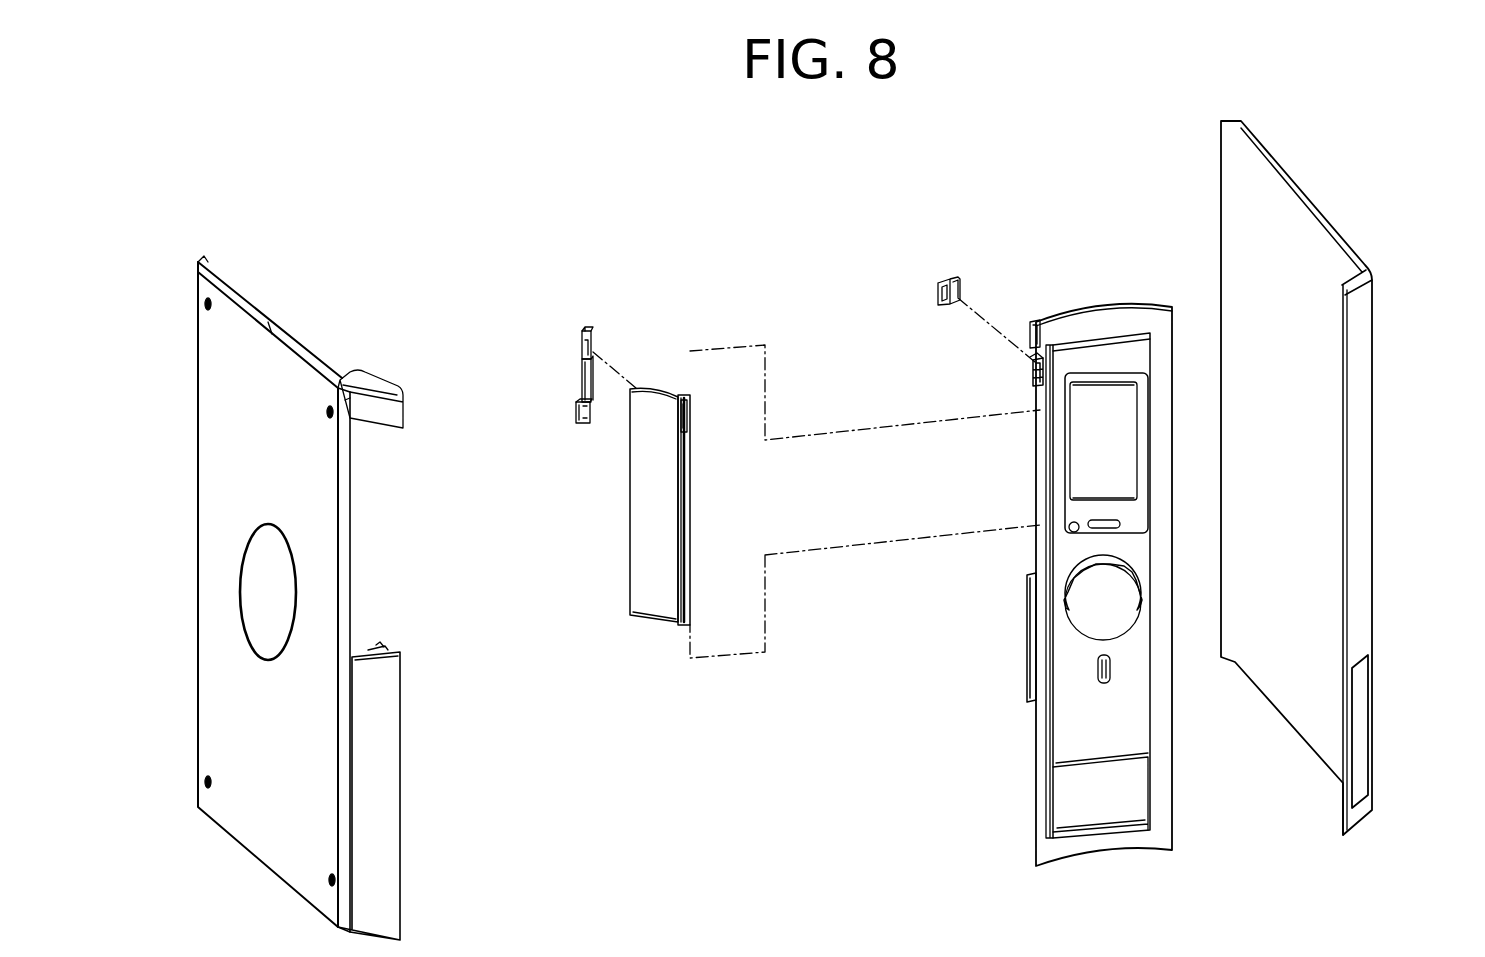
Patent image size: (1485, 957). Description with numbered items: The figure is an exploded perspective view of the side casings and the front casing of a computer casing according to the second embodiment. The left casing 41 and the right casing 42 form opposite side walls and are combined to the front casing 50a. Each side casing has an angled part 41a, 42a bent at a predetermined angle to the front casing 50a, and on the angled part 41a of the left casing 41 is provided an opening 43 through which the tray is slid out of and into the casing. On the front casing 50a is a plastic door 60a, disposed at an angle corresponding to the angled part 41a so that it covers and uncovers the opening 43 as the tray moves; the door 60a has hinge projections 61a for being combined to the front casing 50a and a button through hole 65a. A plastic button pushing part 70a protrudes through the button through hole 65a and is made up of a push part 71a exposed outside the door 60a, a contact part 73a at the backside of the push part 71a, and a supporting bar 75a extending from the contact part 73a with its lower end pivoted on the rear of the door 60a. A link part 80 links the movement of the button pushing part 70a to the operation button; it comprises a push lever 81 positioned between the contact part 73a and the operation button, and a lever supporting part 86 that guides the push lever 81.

The left casing 41 is at (197, 538).
The angled part 41a is at (378, 822).
The opening 43 is at (376, 535).
The right casing 42 is at (1228, 258).
The angled part 42a is at (1362, 407).
The front casing 50a is at (1075, 318).
The door 60a is at (640, 618).
The hinge projections 61a is at (690, 625).
The button through hole 65a is at (682, 420).
The button pushing part 70a is at (534, 359).
The push part 71a is at (582, 372).
The contact part 73a is at (583, 340).
The supporting bar 75a is at (580, 410).
The link part 80 is at (925, 333).
The push lever 81 is at (937, 294).
The lever supporting part 86 is at (1035, 378).